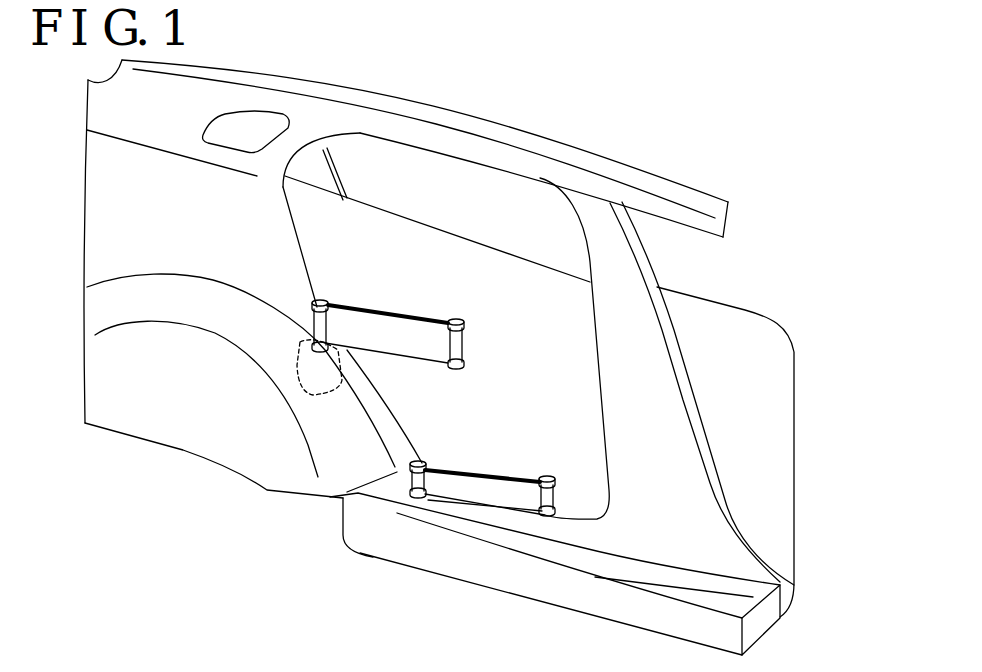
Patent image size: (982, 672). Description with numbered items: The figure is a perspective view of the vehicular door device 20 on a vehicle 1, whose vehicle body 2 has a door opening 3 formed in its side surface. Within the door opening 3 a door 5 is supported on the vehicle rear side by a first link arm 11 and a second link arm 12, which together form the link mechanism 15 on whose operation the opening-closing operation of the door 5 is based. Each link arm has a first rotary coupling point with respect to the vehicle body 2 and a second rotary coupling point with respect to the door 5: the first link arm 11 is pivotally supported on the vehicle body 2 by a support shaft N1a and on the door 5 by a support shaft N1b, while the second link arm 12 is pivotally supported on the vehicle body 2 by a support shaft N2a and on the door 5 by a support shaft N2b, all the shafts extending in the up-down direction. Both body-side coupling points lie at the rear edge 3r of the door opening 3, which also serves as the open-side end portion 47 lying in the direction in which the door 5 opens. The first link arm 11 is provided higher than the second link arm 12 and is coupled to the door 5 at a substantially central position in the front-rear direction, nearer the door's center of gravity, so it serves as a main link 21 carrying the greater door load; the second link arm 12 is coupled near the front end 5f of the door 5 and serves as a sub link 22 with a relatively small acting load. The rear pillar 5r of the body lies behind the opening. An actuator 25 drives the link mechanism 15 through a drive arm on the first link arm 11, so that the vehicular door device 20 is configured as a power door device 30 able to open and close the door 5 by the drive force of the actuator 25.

The vehicle 1 is at (673, 108).
The vehicle body 2 is at (372, 95).
The door opening 3 is at (573, 507).
The rear edge 3r is at (447, 406).
The open-side end portion 47 is at (392, 406).
The door 5 is at (413, 222).
The rear pillar 5r is at (285, 223).
The front end 5f is at (582, 333).
The first link arm 11 is at (392, 306).
The main link 21 is at (365, 311).
The second link arm 12 is at (483, 467).
The sub link 22 is at (458, 472).
The link mechanism 15 is at (436, 380).
The vehicular door device 20 is at (241, 429).
The power door device 30 is at (265, 502).
The actuator 25 is at (300, 362).
The support shaft N1a is at (313, 341).
The support shaft N1b is at (466, 352).
The support shaft N2a is at (412, 485).
The support shaft N2b is at (560, 512).